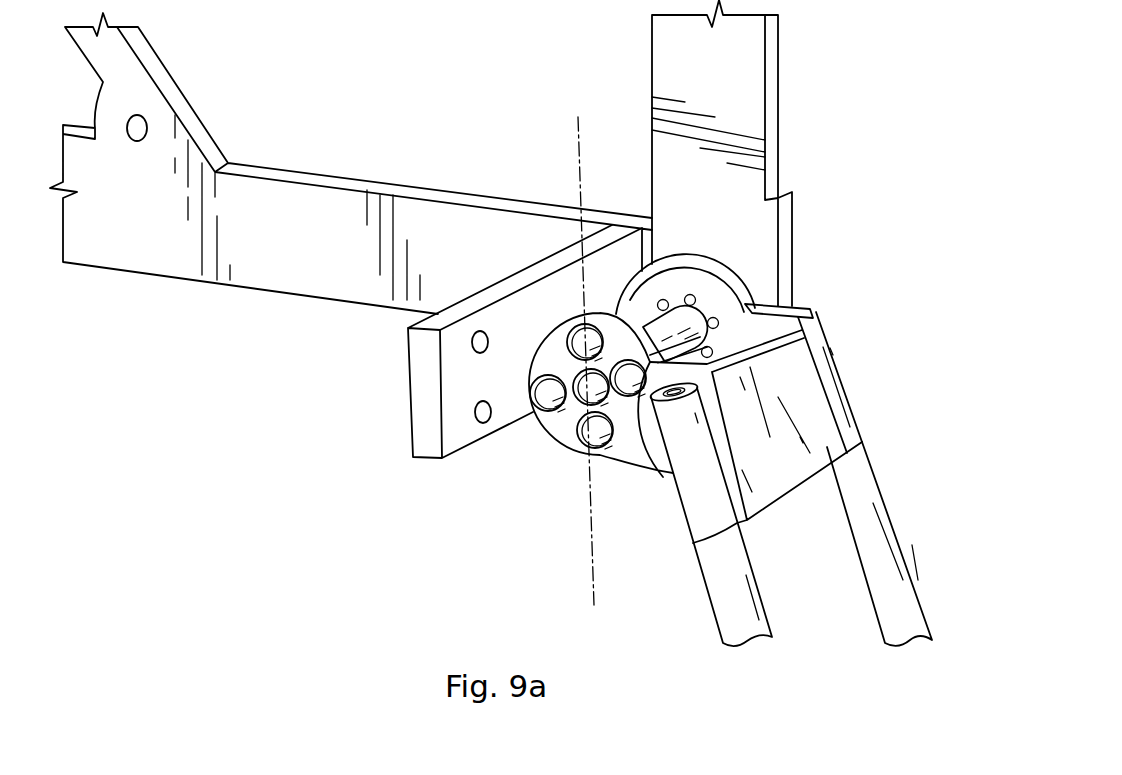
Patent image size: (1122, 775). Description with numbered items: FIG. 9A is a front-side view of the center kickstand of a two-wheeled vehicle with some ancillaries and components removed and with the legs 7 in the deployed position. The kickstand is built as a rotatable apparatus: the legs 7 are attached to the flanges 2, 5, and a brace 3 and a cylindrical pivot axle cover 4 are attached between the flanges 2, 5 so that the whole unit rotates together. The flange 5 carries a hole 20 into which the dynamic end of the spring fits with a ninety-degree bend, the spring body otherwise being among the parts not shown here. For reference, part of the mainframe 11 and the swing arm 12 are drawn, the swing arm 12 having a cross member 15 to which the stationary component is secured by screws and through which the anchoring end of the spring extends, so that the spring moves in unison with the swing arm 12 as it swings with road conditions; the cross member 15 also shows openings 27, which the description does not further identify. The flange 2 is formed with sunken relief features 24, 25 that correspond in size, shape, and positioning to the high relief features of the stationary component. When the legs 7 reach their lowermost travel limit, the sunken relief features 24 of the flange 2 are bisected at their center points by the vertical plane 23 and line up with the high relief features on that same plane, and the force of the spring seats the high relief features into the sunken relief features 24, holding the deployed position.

The flange 2 is at (637, 448).
The brace 3 is at (768, 480).
The pivot axle cover 4 is at (655, 335).
The flange 5 is at (813, 311).
The legs 7 is at (752, 619).
The mainframe 11 is at (668, 58).
The swing arm 12 is at (292, 196).
The cross member 15 is at (425, 383).
The hole 20 is at (790, 300).
The vertical plane 23 is at (590, 363).
The sunken relief features 24 is at (590, 446).
The sunken relief features 25 is at (545, 403).
The holes 27 is at (479, 331).